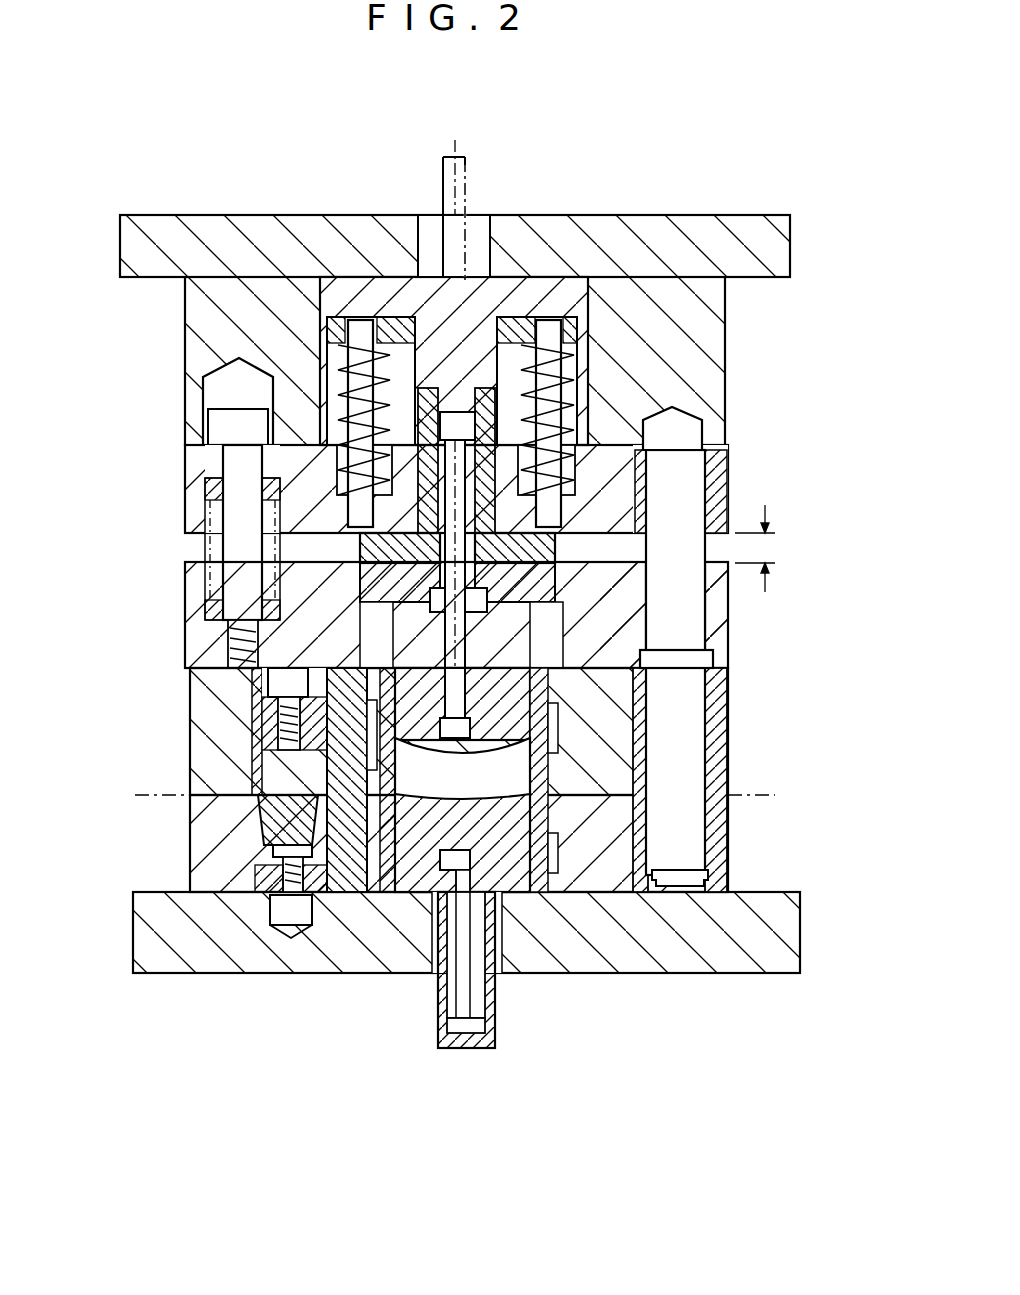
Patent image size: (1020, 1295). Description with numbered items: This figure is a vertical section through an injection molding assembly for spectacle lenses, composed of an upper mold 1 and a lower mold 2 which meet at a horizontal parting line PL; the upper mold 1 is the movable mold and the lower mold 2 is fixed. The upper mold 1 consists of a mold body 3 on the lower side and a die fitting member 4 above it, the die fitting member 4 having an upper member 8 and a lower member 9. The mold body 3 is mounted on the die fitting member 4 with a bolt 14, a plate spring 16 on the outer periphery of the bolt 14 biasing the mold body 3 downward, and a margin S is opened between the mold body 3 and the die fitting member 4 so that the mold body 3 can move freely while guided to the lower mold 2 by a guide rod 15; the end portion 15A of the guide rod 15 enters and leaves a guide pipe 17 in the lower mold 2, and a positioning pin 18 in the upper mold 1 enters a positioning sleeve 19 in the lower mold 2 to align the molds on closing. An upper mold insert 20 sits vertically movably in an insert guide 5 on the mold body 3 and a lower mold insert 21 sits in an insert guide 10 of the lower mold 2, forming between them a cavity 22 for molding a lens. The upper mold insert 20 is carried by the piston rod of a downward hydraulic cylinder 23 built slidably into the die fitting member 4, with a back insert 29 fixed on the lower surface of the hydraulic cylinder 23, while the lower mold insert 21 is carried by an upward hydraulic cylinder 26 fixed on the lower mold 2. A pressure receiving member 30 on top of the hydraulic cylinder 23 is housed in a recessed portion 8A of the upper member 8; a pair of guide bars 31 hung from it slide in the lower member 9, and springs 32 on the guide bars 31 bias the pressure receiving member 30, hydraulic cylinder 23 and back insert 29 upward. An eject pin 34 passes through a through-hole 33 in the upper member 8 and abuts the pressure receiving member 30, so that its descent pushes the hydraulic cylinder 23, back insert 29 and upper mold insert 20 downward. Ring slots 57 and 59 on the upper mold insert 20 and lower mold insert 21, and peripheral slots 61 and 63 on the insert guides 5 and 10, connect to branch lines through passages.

The upper mold 1 is at (146, 620).
The lower mold 2 is at (130, 875).
The mold body 3 is at (202, 655).
The die fitting member 4 is at (185, 330).
The insert guide 5 is at (540, 762).
The upper member 8 is at (122, 247).
The recessed portion 8A is at (335, 400).
The lower member 9 is at (228, 512).
The insert guide 10 is at (545, 892).
The bolt 14 is at (262, 540).
The guide rod 15 is at (697, 497).
The end portion 15A is at (700, 823).
The plate spring 16 is at (213, 488).
The guide pipe 17 is at (705, 855).
The positioning pin 18 is at (262, 745).
The positioning sleeve 19 is at (255, 843).
The upper mold insert 20 is at (520, 700).
The lower mold insert 21 is at (522, 880).
The cavity 22 is at (357, 870).
The hydraulic cylinder 23 is at (645, 462).
The hydraulic cylinder 26 is at (455, 1050).
The back insert 29 is at (630, 635).
The pressure receiving member 30 is at (352, 277).
The guide bar 31 is at (365, 460).
The spring 32 is at (345, 418).
The through-hole 33 is at (425, 213).
The eject pin 34 is at (468, 170).
The ring slot 57 is at (563, 680).
The ring slot 59 is at (430, 778).
The peripheral slot 61 is at (560, 728).
The peripheral slot 63 is at (315, 893).
The margin S is at (767, 548).
The parting line PL is at (432, 797).